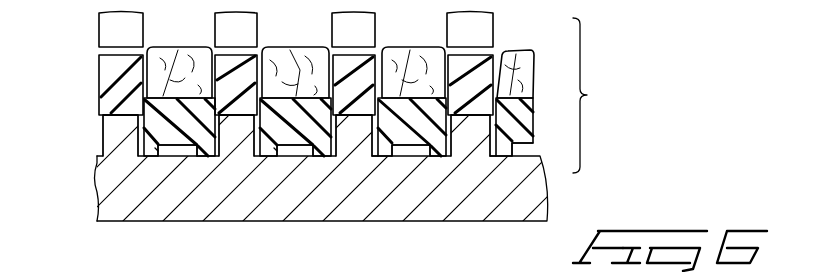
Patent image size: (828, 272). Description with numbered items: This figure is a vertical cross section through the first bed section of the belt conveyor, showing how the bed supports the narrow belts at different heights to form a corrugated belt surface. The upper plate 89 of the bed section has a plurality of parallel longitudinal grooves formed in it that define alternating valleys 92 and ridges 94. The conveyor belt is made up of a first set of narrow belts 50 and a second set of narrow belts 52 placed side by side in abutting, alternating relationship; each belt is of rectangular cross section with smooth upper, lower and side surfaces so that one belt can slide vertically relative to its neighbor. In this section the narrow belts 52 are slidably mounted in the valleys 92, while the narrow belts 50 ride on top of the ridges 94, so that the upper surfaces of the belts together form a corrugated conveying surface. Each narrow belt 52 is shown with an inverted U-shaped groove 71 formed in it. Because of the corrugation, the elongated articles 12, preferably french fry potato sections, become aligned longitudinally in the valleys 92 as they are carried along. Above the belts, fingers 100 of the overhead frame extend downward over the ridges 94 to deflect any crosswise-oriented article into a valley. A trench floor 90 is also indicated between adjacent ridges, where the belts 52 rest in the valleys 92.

The elongated article 12 is at (175, 58).
The first set of narrow belts 50 is at (105, 72).
The second set of narrow belts 52 is at (216, 157).
The inverted U-shaped groove 71 is at (172, 152).
The upper plate 89 is at (320, 207).
The trench floor 90 is at (373, 158).
The valley 92 is at (186, 157).
The ridge 94 is at (131, 139).
The finger 100 is at (114, 42).